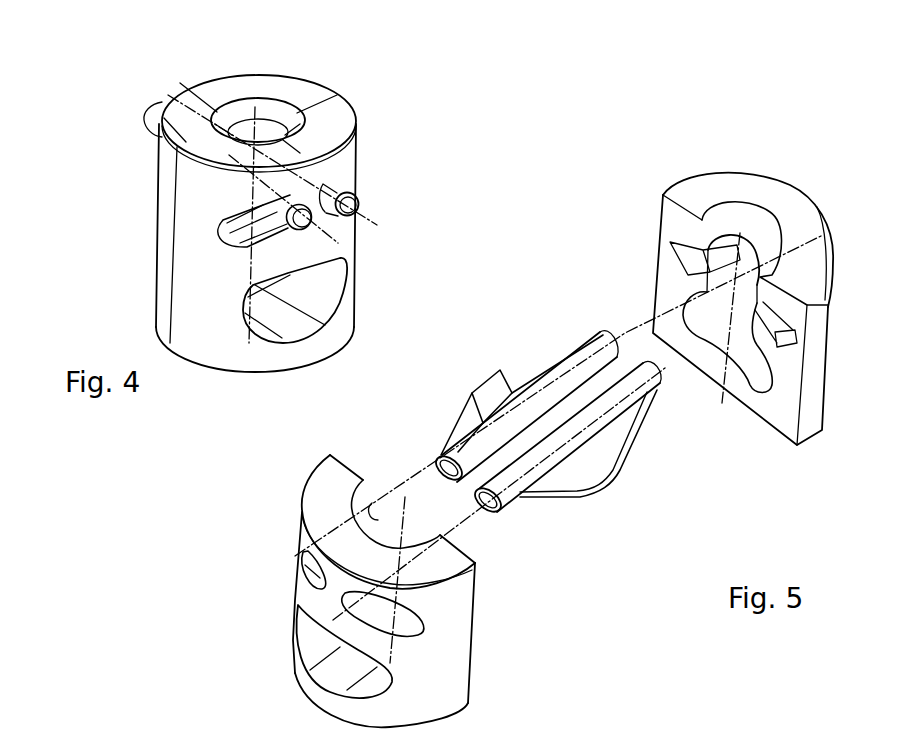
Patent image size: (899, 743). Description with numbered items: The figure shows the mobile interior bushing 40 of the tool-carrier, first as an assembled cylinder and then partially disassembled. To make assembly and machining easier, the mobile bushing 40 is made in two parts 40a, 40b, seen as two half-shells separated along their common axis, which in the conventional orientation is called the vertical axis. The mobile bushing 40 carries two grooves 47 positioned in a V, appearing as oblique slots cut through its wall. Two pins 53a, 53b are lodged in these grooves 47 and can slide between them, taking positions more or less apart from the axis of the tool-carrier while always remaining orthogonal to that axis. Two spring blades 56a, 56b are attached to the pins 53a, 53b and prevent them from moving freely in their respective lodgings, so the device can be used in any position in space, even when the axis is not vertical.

In FIG. 4, the mobile interior bushing 40 is at (313, 67).
In FIG. 4, the part of mobile bushing 40a is at (273, 87).
In FIG. 5, the part of mobile bushing 40a is at (743, 309).
In FIG. 4, the part of mobile bushing 40b is at (334, 118).
In FIG. 5, the part of mobile bushing 40b is at (384, 591).
In FIG. 4, the grooves 47 is at (247, 230).
In FIG. 5, the grooves 47 is at (310, 567).
In FIG. 4, the pin 53a is at (360, 202).
In FIG. 5, the pin 53a is at (607, 420).
In FIG. 4, the pin 53b is at (148, 123).
In FIG. 5, the pin 53b is at (483, 437).
In FIG. 5, the spring blade 56a is at (567, 502).
In FIG. 5, the spring blade 56b is at (547, 358).